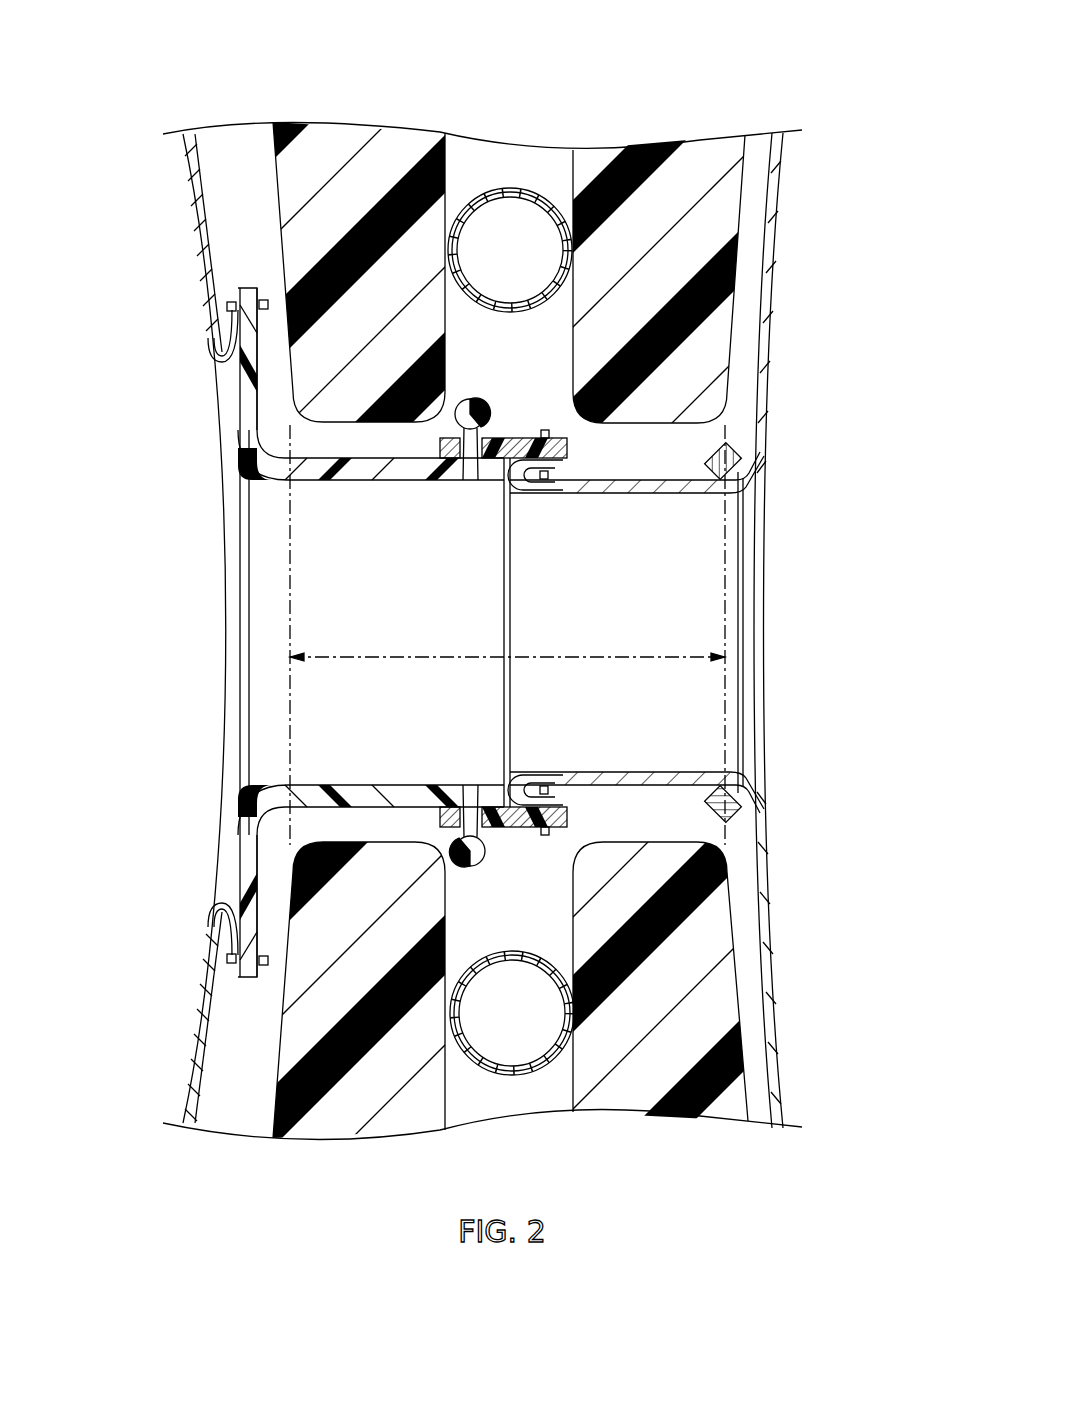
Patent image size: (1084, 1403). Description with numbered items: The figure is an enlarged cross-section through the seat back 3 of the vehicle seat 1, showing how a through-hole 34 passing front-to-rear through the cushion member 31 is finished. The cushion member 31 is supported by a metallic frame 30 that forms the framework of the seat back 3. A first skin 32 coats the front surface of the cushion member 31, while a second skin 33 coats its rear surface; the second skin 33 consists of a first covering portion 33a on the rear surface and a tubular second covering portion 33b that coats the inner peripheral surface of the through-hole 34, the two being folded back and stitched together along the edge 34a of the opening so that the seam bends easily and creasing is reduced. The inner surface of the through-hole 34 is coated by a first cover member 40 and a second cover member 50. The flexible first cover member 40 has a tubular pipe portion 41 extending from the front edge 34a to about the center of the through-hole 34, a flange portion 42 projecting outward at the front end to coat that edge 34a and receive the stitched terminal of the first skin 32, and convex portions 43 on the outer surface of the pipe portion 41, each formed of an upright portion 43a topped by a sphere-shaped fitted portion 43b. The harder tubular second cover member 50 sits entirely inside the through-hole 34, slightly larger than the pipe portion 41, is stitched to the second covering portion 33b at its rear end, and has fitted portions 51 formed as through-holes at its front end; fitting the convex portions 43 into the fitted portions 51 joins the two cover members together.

The vehicle seat 1 is at (848, 82).
The seat back 3 is at (848, 268).
The frame 30 is at (500, 187).
The cushion member 31 is at (337, 132).
The first skin 32 is at (190, 238).
The second skin 33 is at (697, 630).
The first covering portion 33a is at (782, 184).
The second covering portion 33b is at (590, 495).
The through-hole 34 is at (590, 655).
The edge of the opening 34a is at (735, 420).
The first cover member 40 is at (192, 600).
The pipe portion 41 is at (385, 482).
The flange portion 42 is at (257, 402).
The convex portion 43 is at (463, 633).
The upright portion 43a is at (440, 448).
The fitted portion 43b is at (470, 398).
The second cover member 50 is at (586, 447).
The fitted portion 51 is at (470, 482).